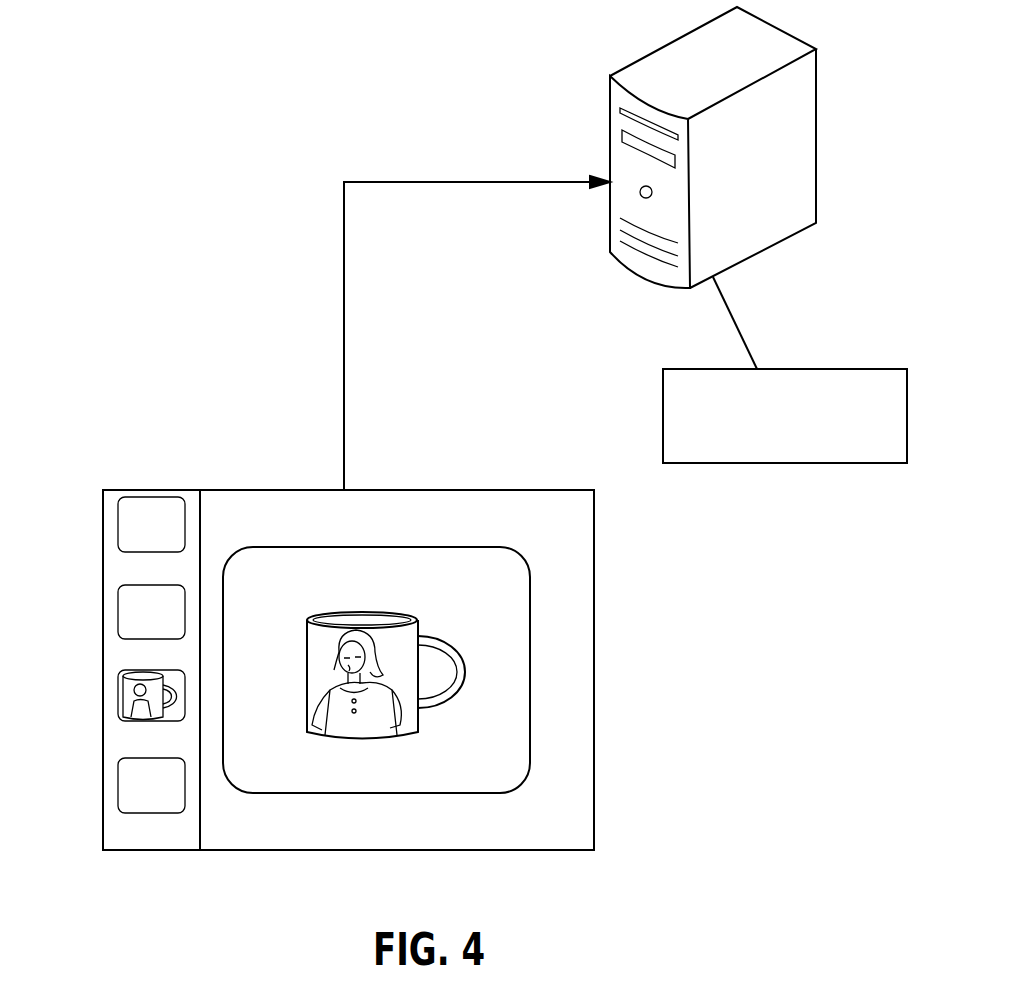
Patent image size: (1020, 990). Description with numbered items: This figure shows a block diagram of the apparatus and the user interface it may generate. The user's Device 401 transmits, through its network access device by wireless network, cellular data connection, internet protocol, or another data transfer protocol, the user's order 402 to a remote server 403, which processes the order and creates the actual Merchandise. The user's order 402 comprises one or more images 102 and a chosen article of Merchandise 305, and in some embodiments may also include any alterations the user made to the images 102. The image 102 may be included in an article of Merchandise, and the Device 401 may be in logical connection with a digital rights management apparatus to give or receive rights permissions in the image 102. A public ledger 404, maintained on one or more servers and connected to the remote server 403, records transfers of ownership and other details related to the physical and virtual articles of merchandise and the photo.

The image 102 is at (253, 612).
The chosen article of Merchandise 305 is at (115, 660).
The user's Device 401 is at (428, 715).
The user's order 402 is at (332, 610).
The remote server 403 is at (610, 145).
The public ledger 404 is at (672, 433).